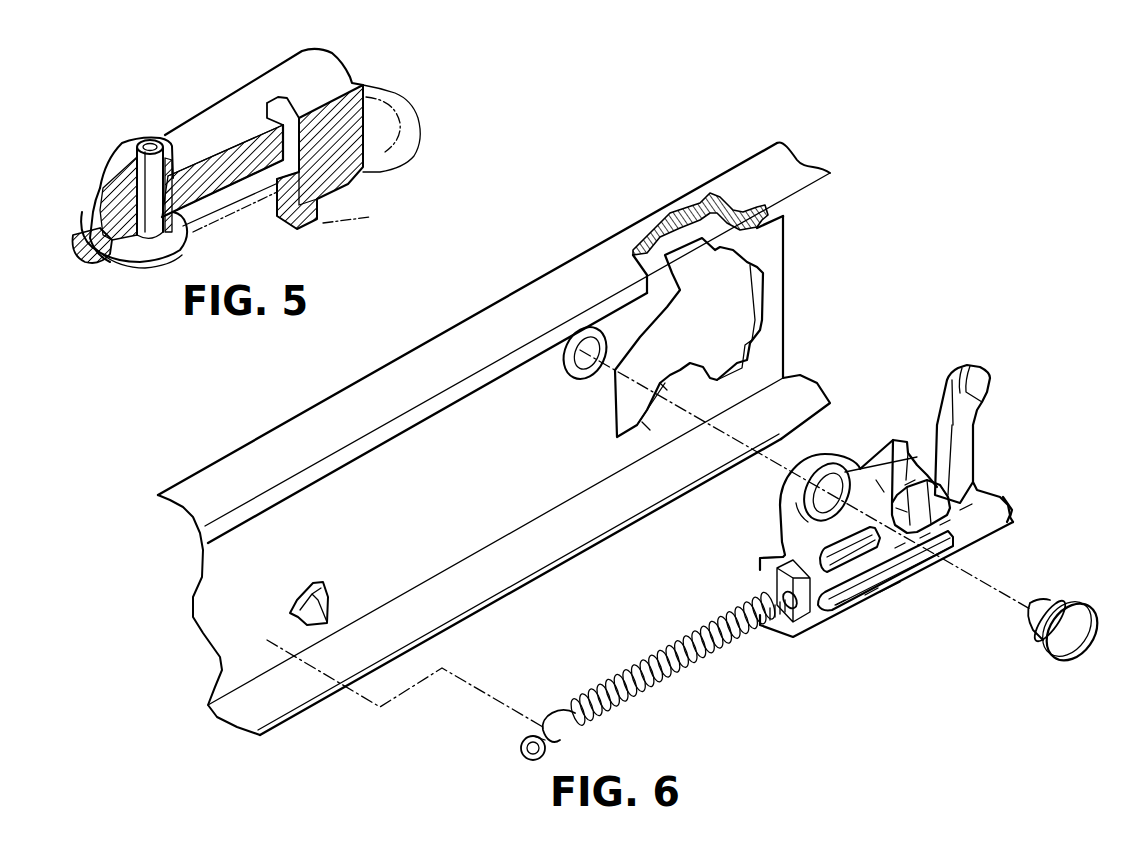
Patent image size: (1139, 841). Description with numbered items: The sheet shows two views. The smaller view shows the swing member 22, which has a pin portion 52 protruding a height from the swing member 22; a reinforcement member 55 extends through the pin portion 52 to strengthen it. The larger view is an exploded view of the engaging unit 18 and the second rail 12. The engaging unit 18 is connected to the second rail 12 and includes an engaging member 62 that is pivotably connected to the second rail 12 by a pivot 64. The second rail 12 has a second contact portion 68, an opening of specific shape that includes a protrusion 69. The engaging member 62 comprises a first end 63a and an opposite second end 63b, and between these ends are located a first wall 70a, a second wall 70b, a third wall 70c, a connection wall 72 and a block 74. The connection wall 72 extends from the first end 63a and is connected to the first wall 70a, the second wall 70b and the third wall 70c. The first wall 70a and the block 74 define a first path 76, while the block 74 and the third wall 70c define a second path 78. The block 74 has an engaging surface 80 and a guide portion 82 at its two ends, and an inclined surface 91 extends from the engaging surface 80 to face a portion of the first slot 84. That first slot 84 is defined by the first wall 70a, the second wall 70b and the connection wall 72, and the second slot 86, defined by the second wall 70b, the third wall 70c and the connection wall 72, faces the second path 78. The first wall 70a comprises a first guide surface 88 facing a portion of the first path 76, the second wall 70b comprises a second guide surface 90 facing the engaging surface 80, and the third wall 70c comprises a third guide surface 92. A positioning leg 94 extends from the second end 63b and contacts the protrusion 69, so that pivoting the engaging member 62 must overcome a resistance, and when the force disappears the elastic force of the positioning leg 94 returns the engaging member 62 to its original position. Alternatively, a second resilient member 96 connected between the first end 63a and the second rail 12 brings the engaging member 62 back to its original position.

In FIG. 6, the second rail 12 is at (501, 505).
In FIG. 6, the engaging unit 18 is at (975, 287).
In FIG. 5, the swing member 22 is at (212, 118).
In FIG. 5, the pin portion 52 is at (120, 158).
In FIG. 5, the reinforcement member 55 is at (150, 147).
In FIG. 6, the engaging member 62 is at (790, 517).
In FIG. 6, the first end 63a is at (777, 560).
In FIG. 6, the second end 63b is at (1005, 513).
In FIG. 6, the pivot 64 is at (1078, 645).
In FIG. 6, the second contact portion 68 is at (703, 307).
In FIG. 6, the protrusion 69 is at (727, 252).
In FIG. 6, the first wall 70a is at (790, 556).
In FIG. 6, the second wall 70b is at (846, 596).
In FIG. 6, the third wall 70c is at (886, 570).
In FIG. 6, the connection wall 72 is at (813, 632).
In FIG. 6, the block 74 is at (965, 508).
In FIG. 6, the first path 76 is at (950, 475).
In FIG. 6, the second path 78 is at (924, 536).
In FIG. 6, the engaging surface 80 is at (945, 520).
In FIG. 6, the guide portion 82 is at (950, 482).
In FIG. 6, the first slot 84 is at (870, 592).
In FIG. 6, the second slot 86 is at (840, 605).
In FIG. 6, the first guide surface 88 is at (913, 486).
In FIG. 6, the second guide surface 90 is at (898, 546).
In FIG. 6, the inclined surface 91 is at (883, 490).
In FIG. 6, the third guide surface 92 is at (980, 491).
In FIG. 6, the positioning leg 94 is at (970, 415).
In FIG. 6, the second resilient member 96 is at (690, 676).